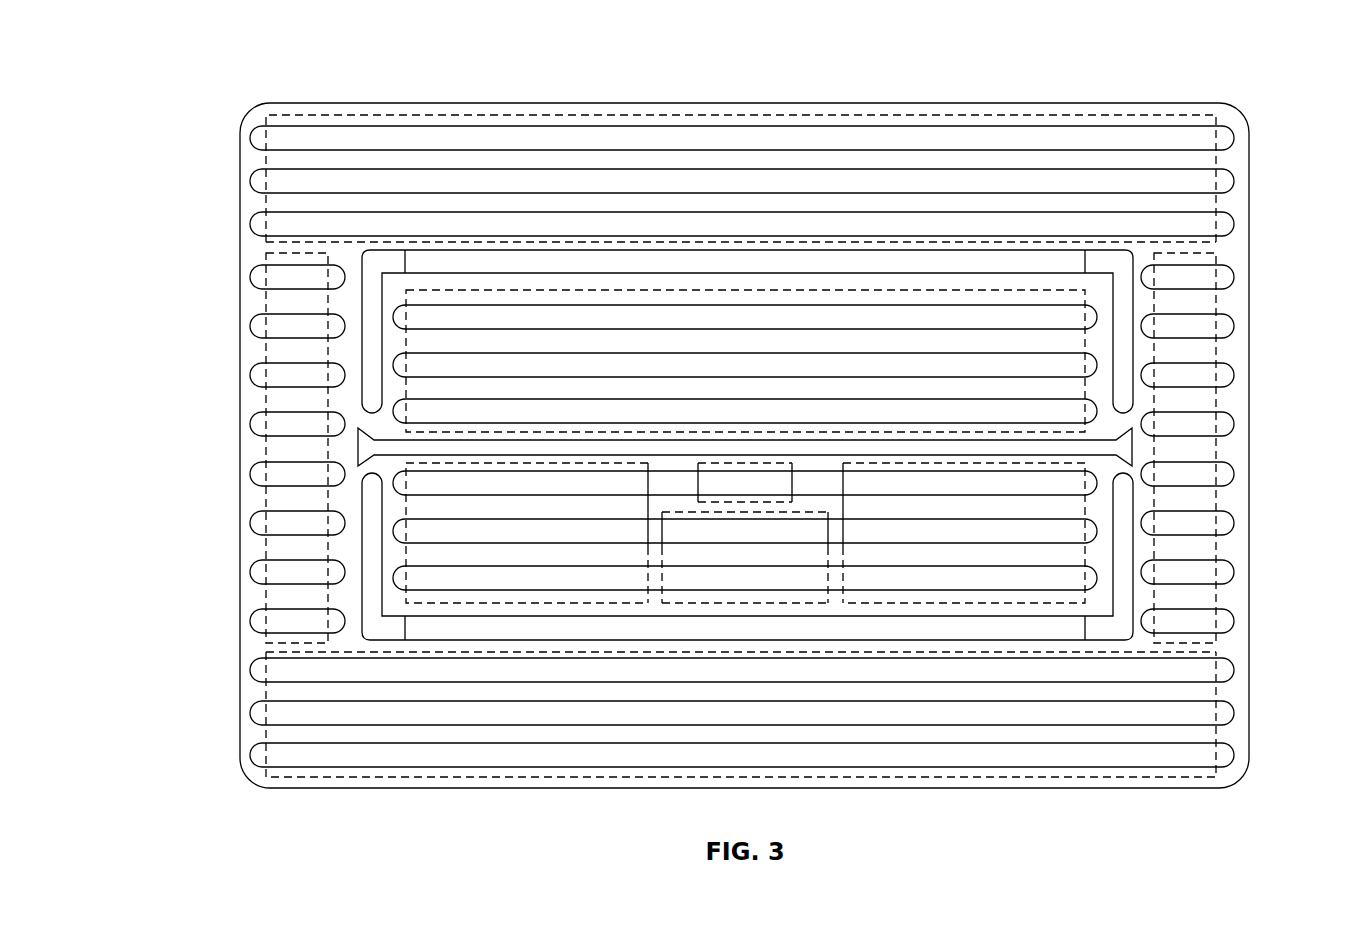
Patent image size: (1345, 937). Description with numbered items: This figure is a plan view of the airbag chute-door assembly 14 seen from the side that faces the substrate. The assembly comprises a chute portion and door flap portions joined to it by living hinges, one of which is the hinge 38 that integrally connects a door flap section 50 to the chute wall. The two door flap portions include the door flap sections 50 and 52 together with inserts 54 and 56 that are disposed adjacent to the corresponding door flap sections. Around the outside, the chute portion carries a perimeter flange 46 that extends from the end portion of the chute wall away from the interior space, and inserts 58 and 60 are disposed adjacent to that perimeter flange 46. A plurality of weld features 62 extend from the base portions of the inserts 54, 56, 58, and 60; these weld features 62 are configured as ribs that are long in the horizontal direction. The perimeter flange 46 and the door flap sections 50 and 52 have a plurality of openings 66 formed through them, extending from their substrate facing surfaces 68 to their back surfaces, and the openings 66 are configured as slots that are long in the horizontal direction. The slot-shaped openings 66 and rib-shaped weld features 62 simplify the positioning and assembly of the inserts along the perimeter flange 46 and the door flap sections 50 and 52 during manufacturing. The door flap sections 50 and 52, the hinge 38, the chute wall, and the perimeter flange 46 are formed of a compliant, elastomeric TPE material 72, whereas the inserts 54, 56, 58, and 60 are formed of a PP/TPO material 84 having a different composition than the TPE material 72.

The airbag chute-door assembly 14 is at (188, 90).
The hinge 38 is at (533, 257).
The perimeter flange 46 is at (635, 160).
The door flap section 50 is at (869, 387).
The door flap section 52 is at (395, 553).
The insert 54 is at (786, 290).
The insert 56 is at (550, 602).
The insert 58 is at (263, 157).
The insert 60 is at (258, 690).
The weld feature 62 is at (298, 278).
The opening 66 is at (250, 277).
The substrate facing surface 68 is at (395, 290).
The TPE material 72 is at (1037, 340).
The PP/TPO material 84 is at (493, 360).